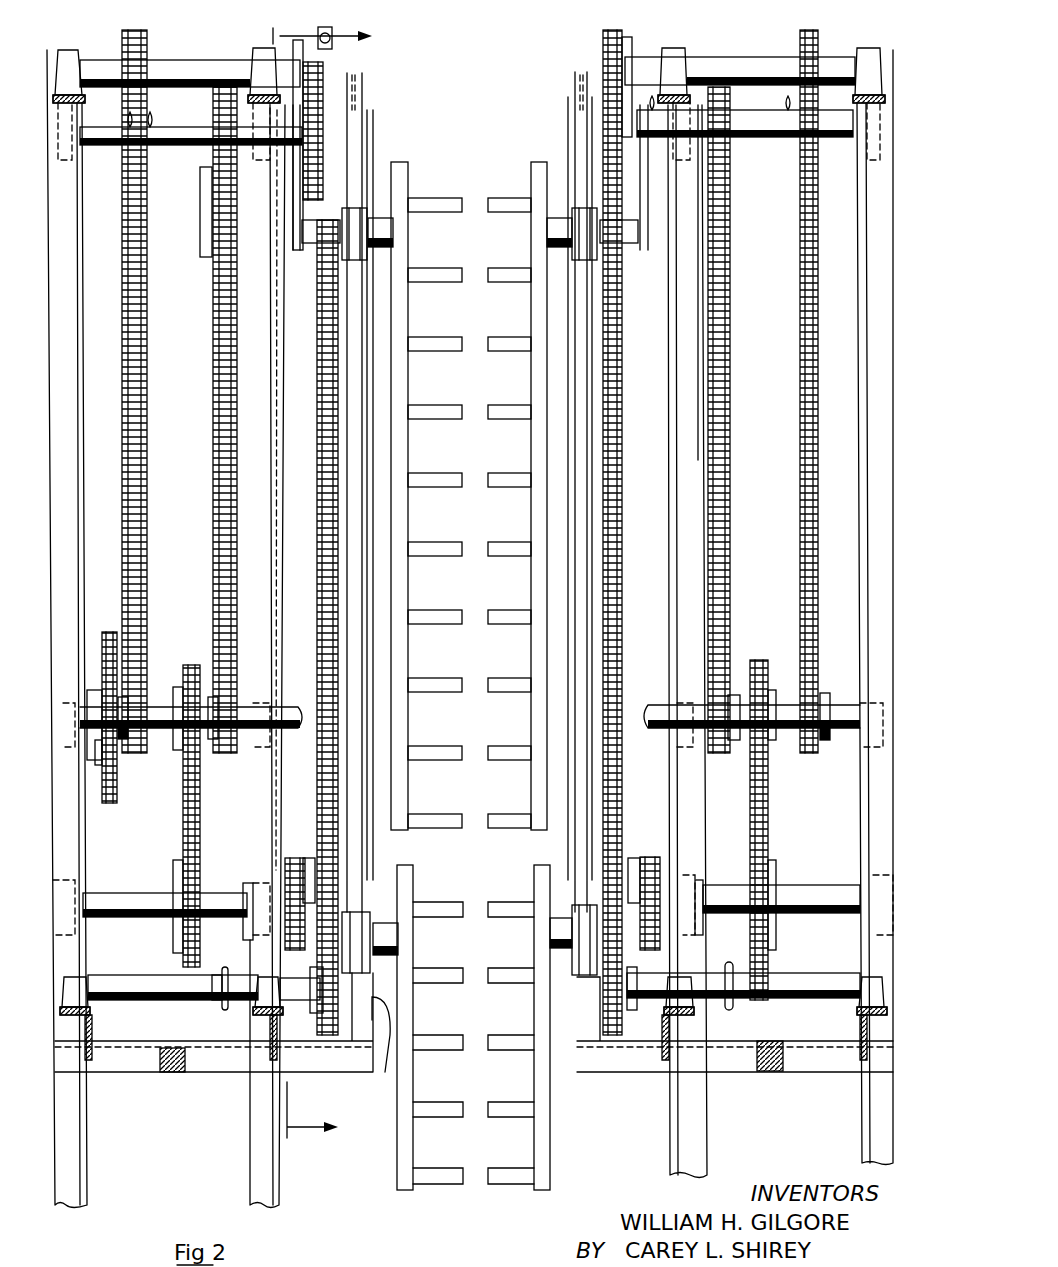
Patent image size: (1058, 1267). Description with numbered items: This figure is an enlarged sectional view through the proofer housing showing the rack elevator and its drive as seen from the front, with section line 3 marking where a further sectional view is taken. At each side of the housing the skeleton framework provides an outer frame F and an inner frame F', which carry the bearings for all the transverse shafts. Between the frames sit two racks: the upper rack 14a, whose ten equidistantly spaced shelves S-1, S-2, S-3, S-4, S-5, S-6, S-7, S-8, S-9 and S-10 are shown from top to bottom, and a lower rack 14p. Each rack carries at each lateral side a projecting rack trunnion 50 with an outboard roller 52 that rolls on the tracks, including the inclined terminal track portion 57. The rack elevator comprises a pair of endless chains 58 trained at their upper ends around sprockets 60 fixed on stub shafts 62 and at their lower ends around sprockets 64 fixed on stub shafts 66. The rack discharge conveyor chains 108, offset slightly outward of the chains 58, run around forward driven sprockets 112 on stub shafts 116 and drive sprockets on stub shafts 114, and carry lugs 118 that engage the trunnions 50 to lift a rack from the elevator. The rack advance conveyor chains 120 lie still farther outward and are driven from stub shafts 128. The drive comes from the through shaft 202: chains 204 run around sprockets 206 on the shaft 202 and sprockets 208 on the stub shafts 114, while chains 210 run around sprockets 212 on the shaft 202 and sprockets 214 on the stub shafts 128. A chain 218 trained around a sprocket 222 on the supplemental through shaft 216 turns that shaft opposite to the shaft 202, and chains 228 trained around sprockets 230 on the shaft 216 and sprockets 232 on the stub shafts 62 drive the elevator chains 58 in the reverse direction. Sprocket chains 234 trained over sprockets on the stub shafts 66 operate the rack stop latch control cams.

The section line 3— 3 is at (331, 582).
The rack 14a is at (400, 158).
The rack 14p is at (415, 892).
The rack trunnion 50 is at (377, 215).
The outboard roller 52 is at (367, 212).
The lower track terminal sloping portion 57 is at (384, 1072).
The endless chain of rack elevator 58 is at (337, 42).
The sprocket 60 is at (272, 36).
The stub shaft 62 is at (160, 62).
The sprocket 64 is at (317, 1008).
The stub shaft 66 is at (125, 1000).
The endless chain of rack discharge conveyor 108 is at (325, 70).
The forward driven sprocket 112 is at (297, 205).
The stub shaft 114 is at (180, 145).
The stub shaft 116 is at (150, 140).
The lug 118 is at (318, 243).
The endless chain of rack advance conveyor 120 is at (297, 858).
The stub shaft 128 is at (118, 893).
The through shaft 202 is at (165, 703).
The chain 204 is at (213, 293).
The sprocket 206 is at (212, 740).
The sprocket 208 is at (206, 167).
The chain 210 is at (200, 838).
The sprocket 212 is at (176, 697).
The sprocket 214 is at (177, 928).
The supplemental through shaft 216 is at (90, 705).
The chain 218 is at (117, 777).
The sprocket 222 is at (95, 752).
The chain 228 is at (147, 378).
The sprocket 230 is at (122, 747).
The sprocket 232 is at (112, 60).
The sprocket chain 234 is at (217, 1003).
The outer frame F is at (470, 629).
The inner frame F' is at (478, 656).
The shelf S-1 is at (442, 200).
The shelf S-2 is at (442, 270).
The shelf S-3 is at (442, 339).
The shelf S-4 is at (442, 407).
The shelf S-5 is at (442, 475).
The shelf S-6 is at (442, 544).
The shelf S-7 is at (442, 612).
The shelf S-8 is at (442, 680).
The shelf S-9 is at (442, 748).
The shelf S-10 is at (442, 816).